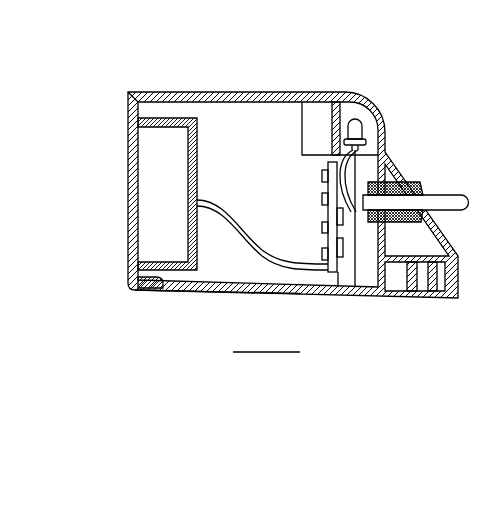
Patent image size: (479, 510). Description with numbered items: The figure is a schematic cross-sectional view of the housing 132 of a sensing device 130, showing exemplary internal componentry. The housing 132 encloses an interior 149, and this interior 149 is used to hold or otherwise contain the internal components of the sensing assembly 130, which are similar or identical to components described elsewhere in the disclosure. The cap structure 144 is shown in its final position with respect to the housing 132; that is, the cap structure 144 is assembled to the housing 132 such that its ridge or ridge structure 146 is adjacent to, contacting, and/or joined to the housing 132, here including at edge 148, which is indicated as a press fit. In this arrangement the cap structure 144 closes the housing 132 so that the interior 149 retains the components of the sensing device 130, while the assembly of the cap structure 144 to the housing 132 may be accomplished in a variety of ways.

The sensing device 130 is at (222, 88).
The housing 132 is at (248, 93).
The cap structure 144 is at (131, 218).
The ridge structure 146 is at (169, 293).
The edge 148 is at (140, 292).
The interior 149 is at (262, 167).